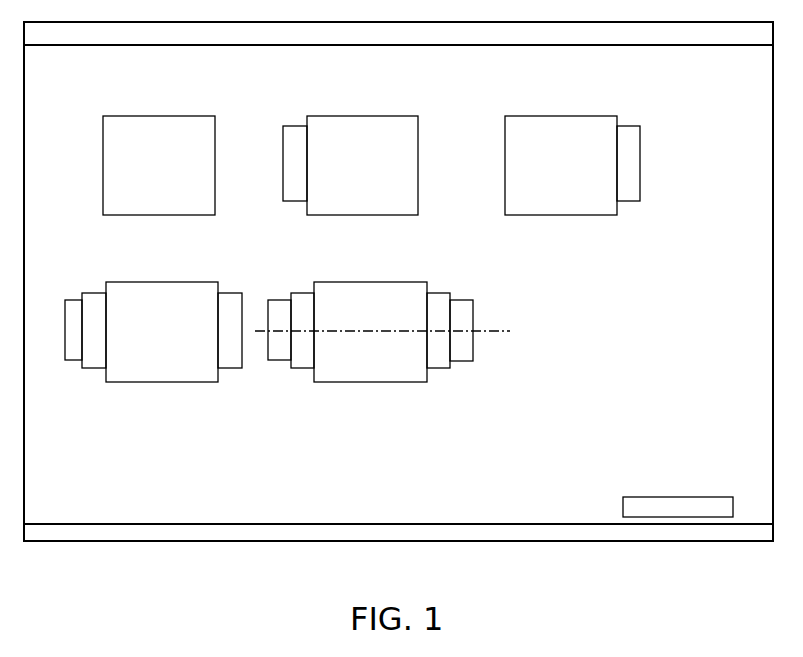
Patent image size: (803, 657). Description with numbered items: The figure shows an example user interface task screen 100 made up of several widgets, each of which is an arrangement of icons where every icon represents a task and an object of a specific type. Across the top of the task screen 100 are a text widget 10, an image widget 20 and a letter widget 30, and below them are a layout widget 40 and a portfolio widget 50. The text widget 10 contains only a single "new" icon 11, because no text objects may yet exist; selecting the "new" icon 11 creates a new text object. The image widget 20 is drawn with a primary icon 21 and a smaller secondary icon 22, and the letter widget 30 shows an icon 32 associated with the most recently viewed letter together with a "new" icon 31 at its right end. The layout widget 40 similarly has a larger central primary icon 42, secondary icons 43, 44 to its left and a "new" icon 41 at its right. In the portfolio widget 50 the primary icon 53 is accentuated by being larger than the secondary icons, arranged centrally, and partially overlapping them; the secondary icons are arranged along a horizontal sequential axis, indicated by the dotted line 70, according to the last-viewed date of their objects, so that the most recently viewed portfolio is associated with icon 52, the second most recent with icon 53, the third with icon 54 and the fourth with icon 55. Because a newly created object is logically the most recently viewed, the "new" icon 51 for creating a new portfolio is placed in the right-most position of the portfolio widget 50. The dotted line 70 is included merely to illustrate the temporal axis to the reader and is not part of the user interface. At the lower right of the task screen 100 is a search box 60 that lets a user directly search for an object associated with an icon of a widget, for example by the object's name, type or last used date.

The task screen 100 is at (578, 566).
The text widget 10 is at (149, 137).
The new icon 11 is at (103, 172).
The image widget 20 is at (348, 158).
The second window 21 is at (348, 216).
The second object side component 22 is at (283, 170).
The letter widget 30 is at (563, 200).
The new indicator tag 31 is at (638, 202).
The icon 32 is at (505, 190).
The layout widget 40 is at (163, 352).
The new indicator tag 41 is at (244, 302).
The fourth object main body 42 is at (164, 282).
The fourth object first side component 43 is at (97, 293).
The fourth object second side component 44 is at (76, 363).
The portfolio widget 50 is at (383, 375).
The new icon 51 is at (476, 345).
The icon 52 is at (438, 369).
The primary icon 53 is at (330, 382).
The icon 54 is at (301, 368).
The icon 55 is at (284, 362).
The search box 60 is at (631, 491).
The dotted line 70 is at (494, 330).